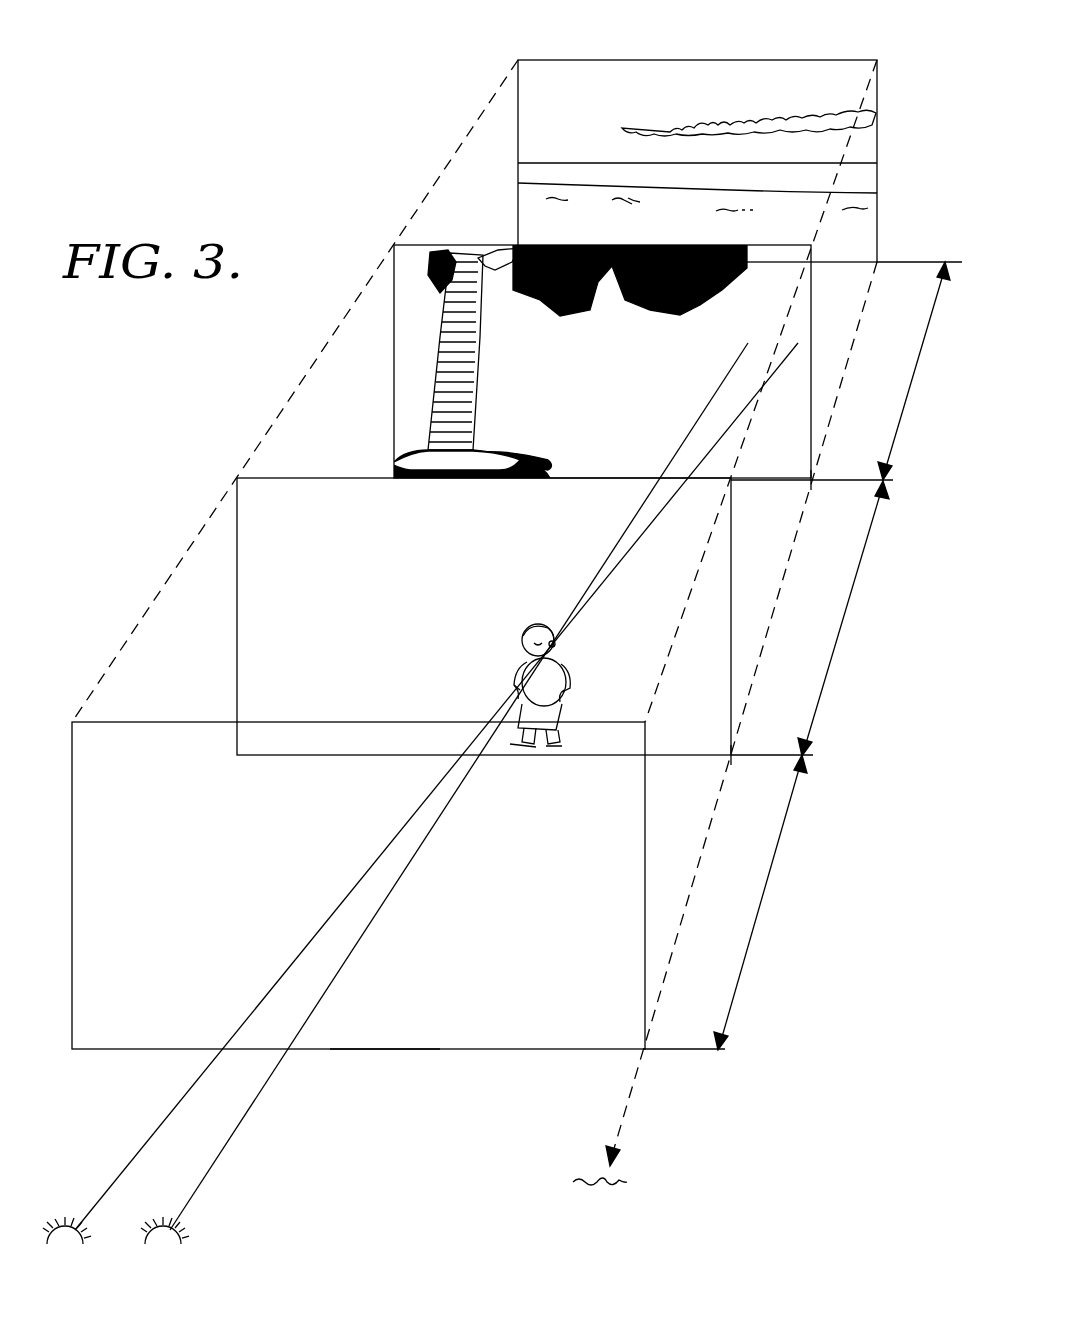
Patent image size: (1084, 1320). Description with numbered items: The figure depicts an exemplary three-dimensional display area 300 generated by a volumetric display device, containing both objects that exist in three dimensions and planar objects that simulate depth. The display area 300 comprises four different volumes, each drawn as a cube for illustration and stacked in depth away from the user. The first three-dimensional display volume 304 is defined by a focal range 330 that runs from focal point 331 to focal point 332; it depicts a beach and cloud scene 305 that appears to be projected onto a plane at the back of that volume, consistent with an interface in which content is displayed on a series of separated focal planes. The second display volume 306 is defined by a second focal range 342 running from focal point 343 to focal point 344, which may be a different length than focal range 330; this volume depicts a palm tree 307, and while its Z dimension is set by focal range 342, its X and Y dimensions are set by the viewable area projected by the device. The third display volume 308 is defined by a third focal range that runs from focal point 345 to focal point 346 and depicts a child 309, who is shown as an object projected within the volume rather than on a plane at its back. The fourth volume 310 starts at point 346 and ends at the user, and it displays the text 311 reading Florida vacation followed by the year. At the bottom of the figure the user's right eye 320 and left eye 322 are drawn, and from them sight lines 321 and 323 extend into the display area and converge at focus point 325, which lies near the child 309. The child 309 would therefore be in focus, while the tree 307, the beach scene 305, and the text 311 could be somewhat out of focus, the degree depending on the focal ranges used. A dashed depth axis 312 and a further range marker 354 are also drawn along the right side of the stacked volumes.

The three-dimensional display area 300 is at (248, 64).
The first three-dimensional display volume 304 is at (877, 176).
The beach and cloud scene 305 is at (712, 128).
The second display volume 306 is at (811, 320).
The palm tree 307 is at (480, 355).
The third display volume 308 is at (733, 562).
The child 309 is at (576, 678).
The fourth volume 310 is at (645, 834).
The text 311 is at (383, 1052).
The depth axis 312 is at (633, 1094).
The right eye 320 is at (164, 1248).
The sight line 321 is at (392, 898).
The left eye 322 is at (66, 1248).
The sight line 323 is at (354, 888).
The focus point 325 is at (526, 630).
The focal range 330 is at (915, 358).
The focal point 331 is at (880, 262).
The focal point 332 is at (813, 480).
The second focal range 342 is at (843, 622).
The focal point 343 is at (812, 484).
The focal point 344 is at (733, 752).
The focal point 345 is at (735, 757).
The focal point 346 is at (648, 1046).
The third depth distance 354 is at (755, 905).